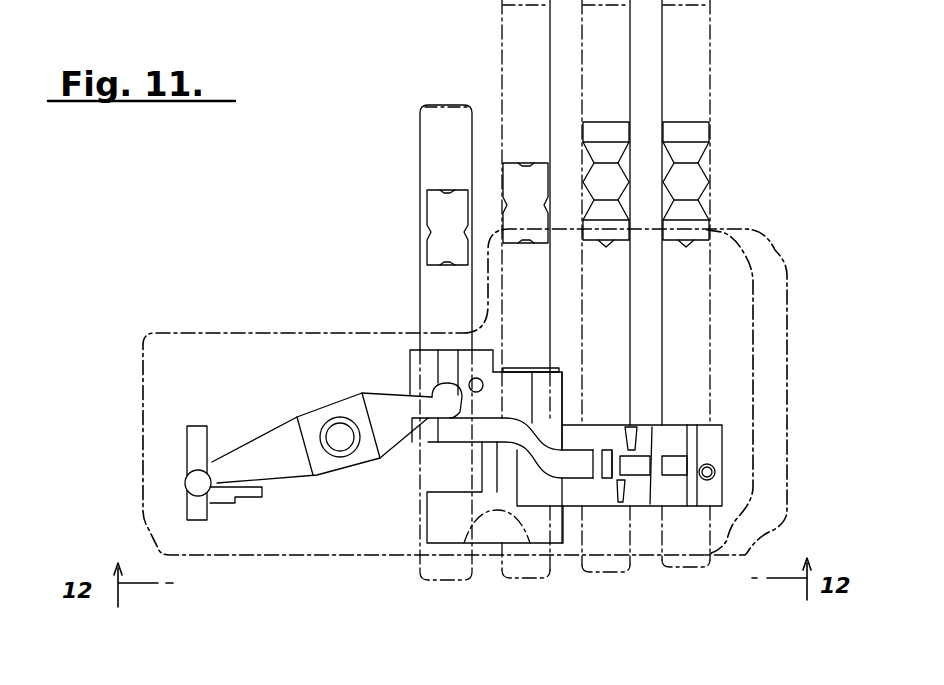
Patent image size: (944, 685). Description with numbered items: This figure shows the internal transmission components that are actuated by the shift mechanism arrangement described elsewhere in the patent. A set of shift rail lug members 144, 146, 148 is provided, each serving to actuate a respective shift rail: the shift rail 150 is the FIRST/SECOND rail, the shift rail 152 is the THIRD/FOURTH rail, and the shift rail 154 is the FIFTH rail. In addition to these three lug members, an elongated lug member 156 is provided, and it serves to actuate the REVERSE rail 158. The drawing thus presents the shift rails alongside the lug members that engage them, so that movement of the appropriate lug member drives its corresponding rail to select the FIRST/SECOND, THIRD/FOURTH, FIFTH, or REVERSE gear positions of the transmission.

The shift rail lug member 144 is at (667, 432).
The shift rail lug member 146 is at (640, 432).
The shift rail lug member 148 is at (597, 420).
The shift rail 150 is at (707, 318).
The shift rail 152 is at (623, 308).
The shift rail 154 is at (545, 300).
The elongated lug member 156 is at (490, 423).
The REVERSE rail 158 is at (433, 304).